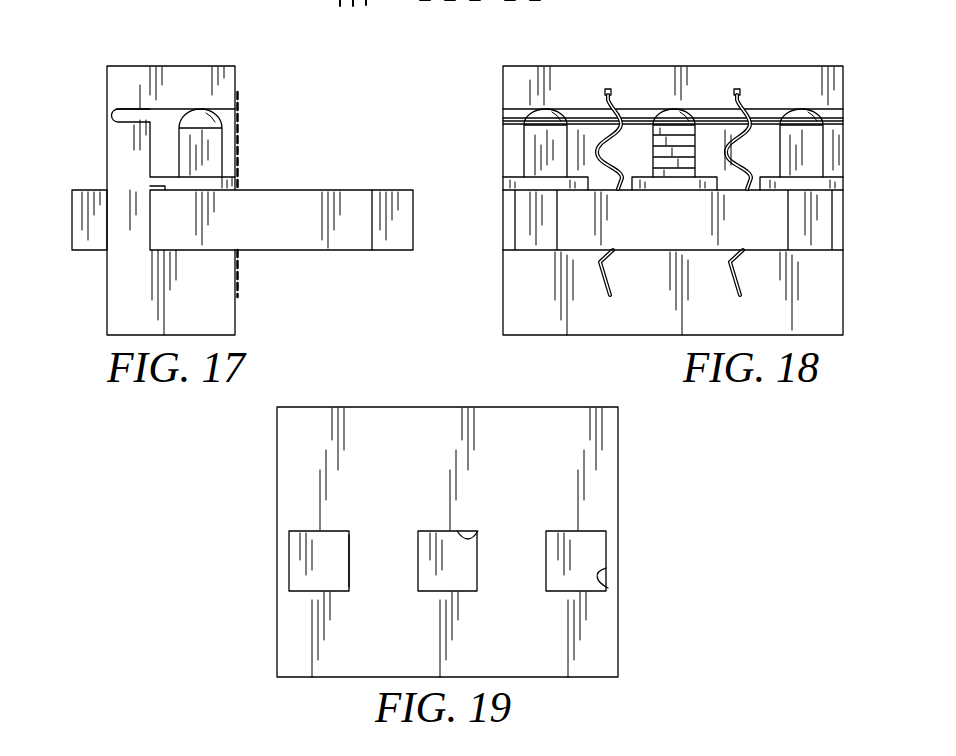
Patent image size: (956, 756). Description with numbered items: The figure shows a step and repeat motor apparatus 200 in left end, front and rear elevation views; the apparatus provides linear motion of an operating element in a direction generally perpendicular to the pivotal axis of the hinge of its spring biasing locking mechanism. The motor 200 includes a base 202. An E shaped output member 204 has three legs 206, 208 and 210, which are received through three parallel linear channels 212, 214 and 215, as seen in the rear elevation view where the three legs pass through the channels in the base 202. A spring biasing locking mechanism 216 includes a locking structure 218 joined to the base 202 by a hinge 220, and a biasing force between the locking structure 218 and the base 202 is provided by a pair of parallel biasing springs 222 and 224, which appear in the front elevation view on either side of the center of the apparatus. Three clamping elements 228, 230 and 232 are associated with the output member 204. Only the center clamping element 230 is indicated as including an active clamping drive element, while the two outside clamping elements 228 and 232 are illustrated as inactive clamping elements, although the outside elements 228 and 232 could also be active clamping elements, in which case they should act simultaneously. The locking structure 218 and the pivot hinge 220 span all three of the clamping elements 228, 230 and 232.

In FIG. 17, the step and repeat motor apparatus 200 is at (160, 48).
In FIG. 18, the step and repeat motor apparatus 200 is at (766, 30).
In FIG. 17, the base 202 is at (205, 318).
In FIG. 18, the base 202 is at (597, 320).
In FIG. 19, the base 202 is at (600, 642).
In FIG. 17, the E shaped output member 204 is at (408, 223).
In FIG. 18, the E shaped output member 204 is at (778, 198).
In FIG. 17, the leg 206 is at (233, 218).
In FIG. 19, the leg 206 is at (594, 540).
In FIG. 19, the leg 208 is at (424, 553).
In FIG. 19, the leg 210 is at (297, 541).
In FIG. 19, the linear channel 212 is at (608, 586).
In FIG. 19, the linear channel 214 is at (478, 540).
In FIG. 19, the linear channel 215 is at (345, 562).
In FIG. 17, the spring biasing locking mechanism 216 is at (219, 165).
In FIG. 18, the spring biasing locking mechanism 216 is at (631, 106).
In FIG. 17, the locking structure 218 is at (223, 90).
In FIG. 18, the locking structure 218 is at (525, 77).
In FIG. 17, the hinge 220 is at (112, 113).
In FIG. 18, the hinge 220 is at (513, 113).
In FIG. 17, the biasing spring 222 is at (240, 176).
In FIG. 18, the biasing spring 222 is at (621, 118).
In FIG. 18, the biasing spring 224 is at (745, 100).
In FIG. 17, the clamping element 228 is at (215, 147).
In FIG. 18, the clamping element 228 is at (532, 145).
In FIG. 18, the center clamping element 230 is at (687, 137).
In FIG. 18, the clamping element 232 is at (818, 145).